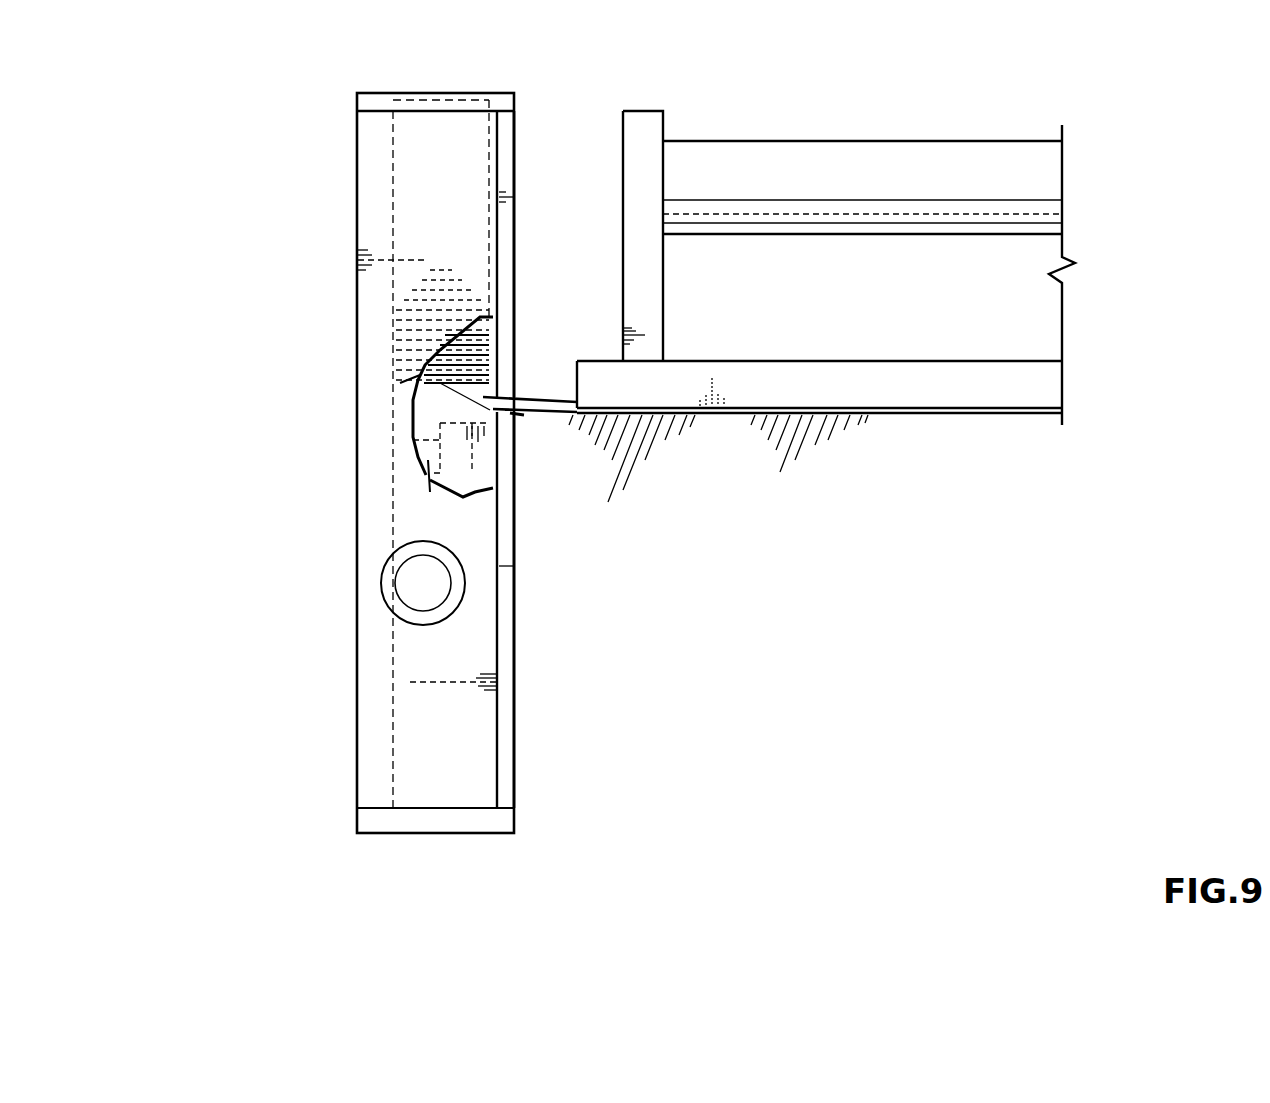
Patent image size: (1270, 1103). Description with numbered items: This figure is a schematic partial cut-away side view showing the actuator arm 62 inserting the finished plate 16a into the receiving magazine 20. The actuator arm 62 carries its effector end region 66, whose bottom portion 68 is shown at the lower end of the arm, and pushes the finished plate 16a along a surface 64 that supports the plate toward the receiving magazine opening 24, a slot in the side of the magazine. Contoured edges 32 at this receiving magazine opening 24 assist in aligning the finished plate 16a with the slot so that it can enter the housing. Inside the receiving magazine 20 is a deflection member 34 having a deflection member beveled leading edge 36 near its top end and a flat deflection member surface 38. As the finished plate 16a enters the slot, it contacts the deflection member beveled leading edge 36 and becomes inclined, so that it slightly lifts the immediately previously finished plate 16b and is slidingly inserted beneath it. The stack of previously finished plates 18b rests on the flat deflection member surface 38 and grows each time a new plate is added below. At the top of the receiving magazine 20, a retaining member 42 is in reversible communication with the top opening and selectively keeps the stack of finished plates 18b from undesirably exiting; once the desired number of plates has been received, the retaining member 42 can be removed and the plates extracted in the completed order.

The receiving magazine 20 is at (326, 790).
The retaining member 42 is at (372, 92).
The stack of previously finished plates 18b is at (337, 93).
The previously finished plate 16b is at (402, 384).
The flat deflection member surface 38 is at (413, 385).
The deflection member 34 is at (430, 462).
The deflection member beveled leading edge 36 is at (470, 395).
The receiving member opening edge contours 32 is at (497, 396).
The finished plate 16a is at (543, 413).
The receiving magazine opening 24 is at (519, 413).
The effector end region 66 is at (570, 362).
The actuator arm 62 is at (850, 117).
The surface 64 is at (700, 415).
The bottom portion of the effector end region 68 is at (928, 413).